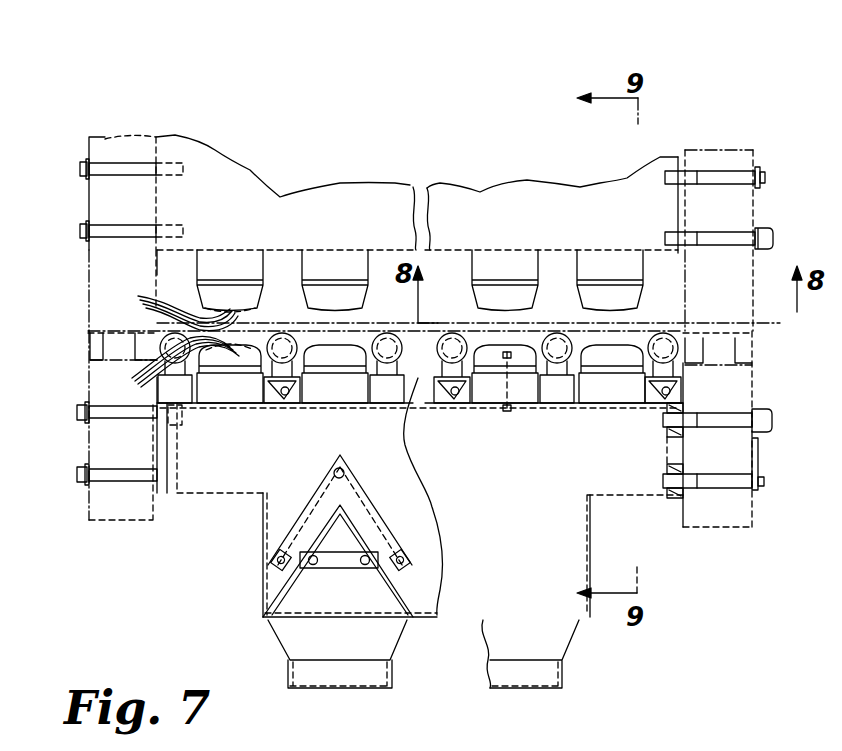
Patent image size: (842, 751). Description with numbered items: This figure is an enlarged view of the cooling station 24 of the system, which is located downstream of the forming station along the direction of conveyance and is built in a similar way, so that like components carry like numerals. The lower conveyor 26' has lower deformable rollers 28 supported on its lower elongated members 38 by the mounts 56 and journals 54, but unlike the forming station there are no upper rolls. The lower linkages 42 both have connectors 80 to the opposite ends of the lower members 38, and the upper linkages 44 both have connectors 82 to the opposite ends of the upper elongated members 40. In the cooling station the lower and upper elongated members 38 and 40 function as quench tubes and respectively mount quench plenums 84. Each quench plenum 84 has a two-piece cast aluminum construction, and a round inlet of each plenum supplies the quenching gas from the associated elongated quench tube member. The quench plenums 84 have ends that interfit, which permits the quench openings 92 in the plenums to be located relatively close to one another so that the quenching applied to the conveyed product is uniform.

The cooling station 24 is at (497, 80).
The lower conveyor 26' is at (87, 294).
The lower deformable rollers 28 is at (300, 342).
The lower elongated members 38 is at (233, 470).
The upper elongated members 40 is at (347, 183).
The lower linkages 42 is at (117, 507).
The upper linkages 44 is at (110, 140).
The journals 54 is at (260, 373).
The mounts 56 is at (295, 397).
The connectors 80 is at (118, 470).
The connectors 82 is at (117, 222).
The quench plenums 84 is at (228, 260).
The quench openings 92 is at (172, 337).